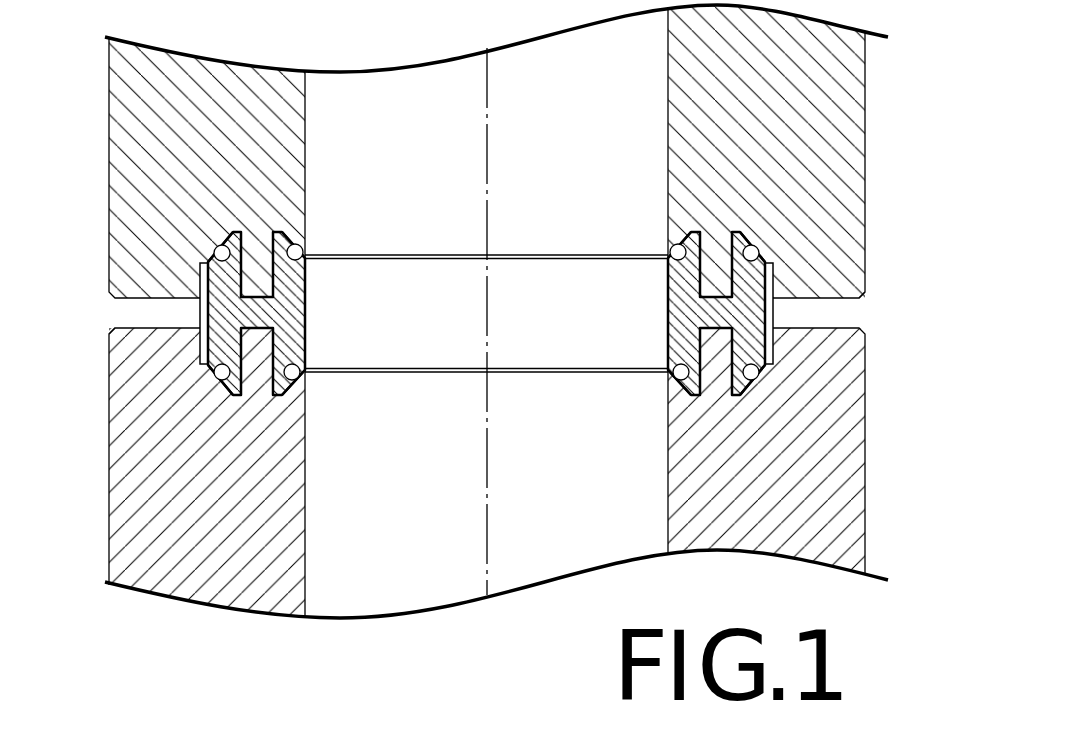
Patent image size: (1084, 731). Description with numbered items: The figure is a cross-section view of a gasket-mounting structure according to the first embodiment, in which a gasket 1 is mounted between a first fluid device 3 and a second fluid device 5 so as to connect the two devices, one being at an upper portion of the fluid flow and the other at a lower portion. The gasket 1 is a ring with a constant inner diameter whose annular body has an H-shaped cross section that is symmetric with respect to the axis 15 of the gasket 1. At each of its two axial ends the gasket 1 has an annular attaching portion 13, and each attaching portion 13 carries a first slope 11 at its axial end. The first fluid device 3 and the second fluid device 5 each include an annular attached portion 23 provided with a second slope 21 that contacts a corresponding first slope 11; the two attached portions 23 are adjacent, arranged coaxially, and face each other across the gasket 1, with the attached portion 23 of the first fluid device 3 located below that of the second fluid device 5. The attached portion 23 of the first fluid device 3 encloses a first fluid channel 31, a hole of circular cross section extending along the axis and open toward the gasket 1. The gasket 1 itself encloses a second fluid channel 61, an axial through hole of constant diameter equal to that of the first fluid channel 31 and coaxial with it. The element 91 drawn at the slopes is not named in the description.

The gasket 1 is at (794, 313).
The first fluid device 3 is at (469, 311).
The second fluid device 5 is at (466, 311).
The first slope 11 is at (214, 251).
The attaching portion 13 is at (196, 283).
The axis 15 is at (487, 328).
The second slope 21 is at (207, 262).
The attached portion 23 is at (102, 362).
The first fluid channel 31 is at (463, 132).
The second fluid channel 61 is at (432, 331).
The seal ring 91 is at (223, 246).